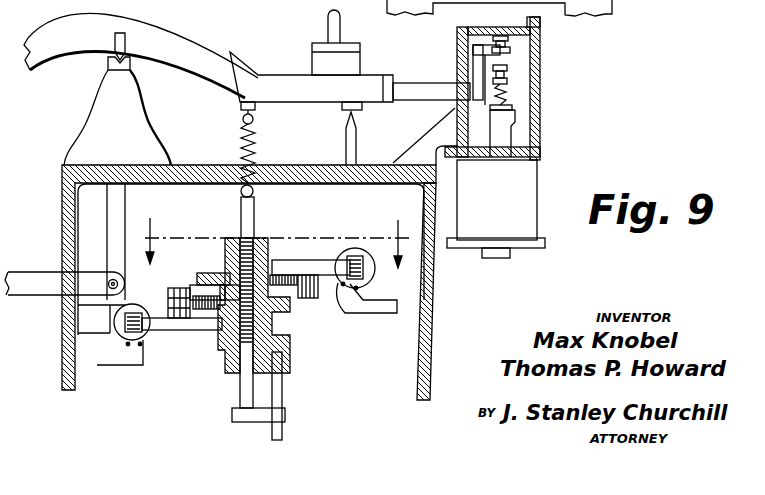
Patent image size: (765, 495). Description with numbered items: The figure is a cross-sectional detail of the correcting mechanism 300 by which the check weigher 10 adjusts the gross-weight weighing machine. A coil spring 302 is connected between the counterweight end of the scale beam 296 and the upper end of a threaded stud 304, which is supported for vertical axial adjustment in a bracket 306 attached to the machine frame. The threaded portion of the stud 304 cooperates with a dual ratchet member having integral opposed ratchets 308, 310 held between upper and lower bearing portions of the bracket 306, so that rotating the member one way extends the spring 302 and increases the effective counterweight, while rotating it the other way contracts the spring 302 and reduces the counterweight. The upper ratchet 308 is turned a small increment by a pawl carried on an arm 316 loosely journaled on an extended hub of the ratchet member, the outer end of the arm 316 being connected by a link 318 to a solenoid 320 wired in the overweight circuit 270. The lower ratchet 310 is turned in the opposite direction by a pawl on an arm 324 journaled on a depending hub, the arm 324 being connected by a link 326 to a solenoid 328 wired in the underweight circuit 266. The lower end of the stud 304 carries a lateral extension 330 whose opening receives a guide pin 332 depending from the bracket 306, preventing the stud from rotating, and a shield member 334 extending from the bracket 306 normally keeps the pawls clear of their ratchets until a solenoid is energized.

The check weigher 10 is at (279, 229).
The underweight circuit 266 is at (97, 357).
The overweight circuit 270 is at (400, 311).
The scale beam 296 is at (141, 55).
The correcting mechanism 300 is at (353, 360).
The coil spring 302 is at (256, 130).
The threaded stud 304 is at (254, 229).
The bracket 306 is at (240, 200).
The upper ratchet 308 is at (228, 272).
The lower ratchet 310 is at (283, 313).
The arm 316 is at (327, 259).
The link 318 is at (355, 254).
The solenoid 320 is at (347, 313).
The arm 324 is at (165, 333).
The link 326 is at (148, 346).
The solenoid 328 is at (116, 324).
The lateral extension 330 is at (232, 415).
The guide pin 332 is at (279, 397).
The shield member 334 is at (193, 288).